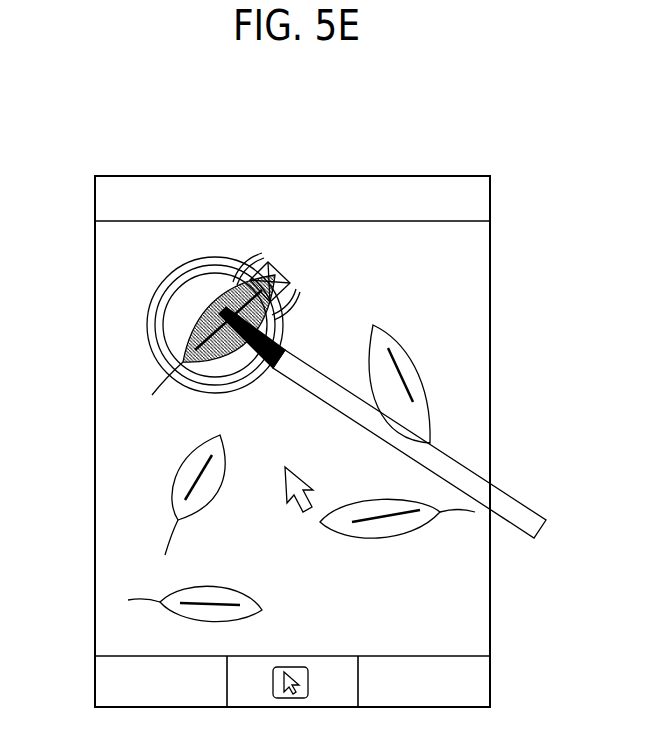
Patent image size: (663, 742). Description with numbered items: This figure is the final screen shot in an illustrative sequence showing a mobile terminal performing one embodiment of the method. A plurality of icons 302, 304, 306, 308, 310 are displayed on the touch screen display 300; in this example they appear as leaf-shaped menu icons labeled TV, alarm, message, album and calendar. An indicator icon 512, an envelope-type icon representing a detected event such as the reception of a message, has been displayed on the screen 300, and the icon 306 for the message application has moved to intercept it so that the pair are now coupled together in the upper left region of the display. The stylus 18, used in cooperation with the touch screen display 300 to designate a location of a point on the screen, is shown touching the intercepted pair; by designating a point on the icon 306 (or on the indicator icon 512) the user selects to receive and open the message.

The touch screen display 300 is at (490, 338).
The icon for message application 306 is at (170, 347).
The indicator icon 512 is at (300, 268).
The stylus 18 is at (523, 514).
The icon 310 is at (422, 372).
The icon 302 is at (175, 487).
The icon 304 is at (243, 602).
The icon 308 is at (356, 536).